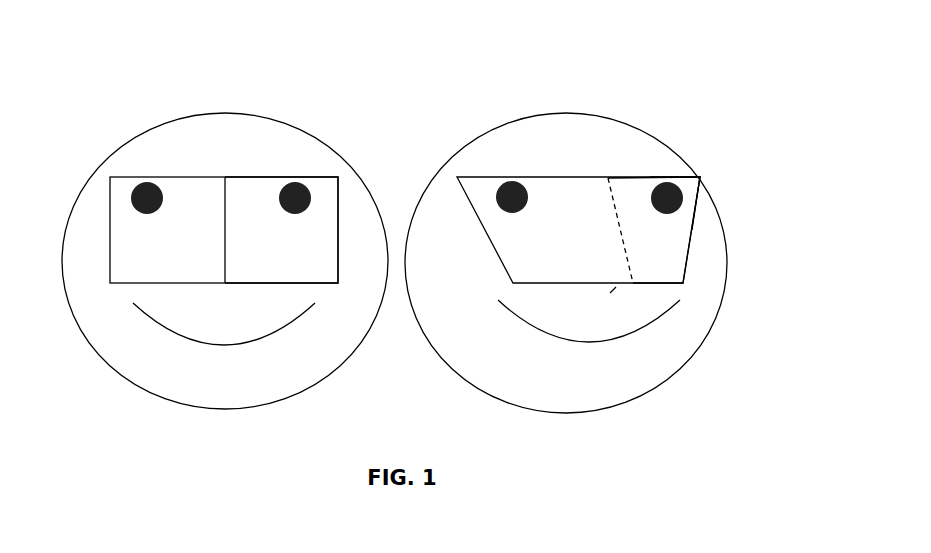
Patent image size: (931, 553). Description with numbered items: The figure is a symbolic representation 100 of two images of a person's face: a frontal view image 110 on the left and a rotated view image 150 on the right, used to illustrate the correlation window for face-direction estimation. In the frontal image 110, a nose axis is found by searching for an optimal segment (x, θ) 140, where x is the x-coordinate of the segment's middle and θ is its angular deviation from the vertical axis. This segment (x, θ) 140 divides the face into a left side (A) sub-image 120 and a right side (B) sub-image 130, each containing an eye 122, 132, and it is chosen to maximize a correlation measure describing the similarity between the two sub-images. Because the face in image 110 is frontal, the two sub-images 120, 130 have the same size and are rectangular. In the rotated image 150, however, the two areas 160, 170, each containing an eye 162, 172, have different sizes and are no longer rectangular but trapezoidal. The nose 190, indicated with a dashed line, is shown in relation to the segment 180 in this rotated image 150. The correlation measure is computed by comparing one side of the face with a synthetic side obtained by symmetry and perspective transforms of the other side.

The symbolic representation 100 is at (712, 52).
The image 110 is at (147, 130).
The left side (A) sub-image 120 is at (200, 193).
The eye 122 is at (147, 183).
The right side (B) sub-image 130 is at (253, 193).
The eye 132 is at (303, 194).
The segment (x, θ) 140 is at (225, 262).
The image 150 is at (668, 378).
The area 160 is at (578, 195).
The eye 162 is at (512, 190).
The area 170 is at (683, 180).
The eye 172 is at (667, 198).
The segment 180 is at (613, 182).
The nose 190 is at (630, 259).